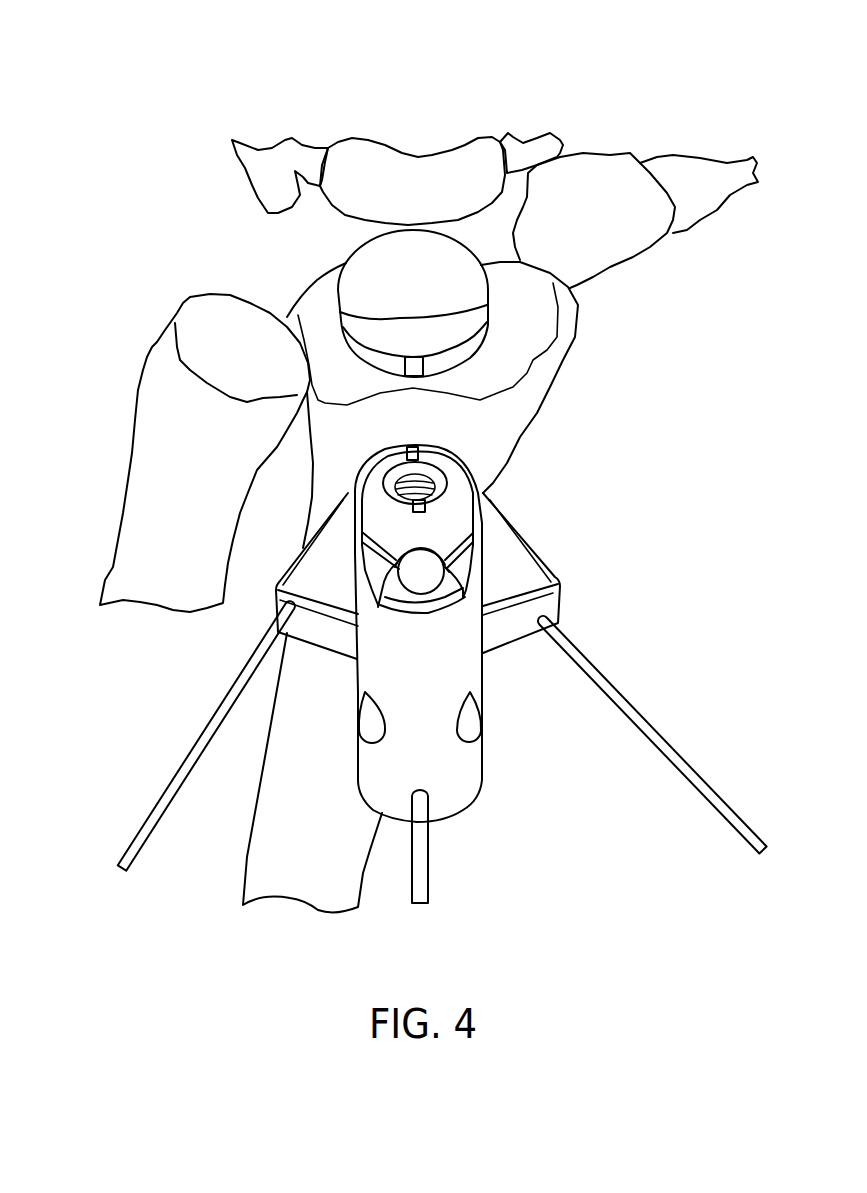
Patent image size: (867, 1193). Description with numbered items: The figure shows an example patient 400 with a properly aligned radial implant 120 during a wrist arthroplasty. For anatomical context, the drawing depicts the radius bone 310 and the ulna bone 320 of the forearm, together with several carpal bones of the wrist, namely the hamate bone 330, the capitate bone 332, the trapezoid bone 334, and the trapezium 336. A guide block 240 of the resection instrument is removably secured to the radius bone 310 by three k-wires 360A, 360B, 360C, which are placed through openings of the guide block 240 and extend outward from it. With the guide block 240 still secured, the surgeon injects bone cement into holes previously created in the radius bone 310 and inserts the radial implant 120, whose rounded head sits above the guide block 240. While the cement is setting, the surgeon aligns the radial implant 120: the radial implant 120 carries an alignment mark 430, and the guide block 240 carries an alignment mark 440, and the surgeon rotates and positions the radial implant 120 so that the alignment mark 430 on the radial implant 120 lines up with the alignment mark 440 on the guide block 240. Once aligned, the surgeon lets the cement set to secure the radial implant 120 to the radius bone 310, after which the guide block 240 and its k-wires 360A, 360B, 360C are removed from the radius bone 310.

The patient 400 is at (176, 84).
The radial implant 120 is at (330, 255).
The guide block 240 is at (557, 567).
The radius bone 310 is at (268, 866).
The ulna bone 320 is at (135, 531).
The hamate bone 330 is at (258, 174).
The capitate bone 332 is at (402, 162).
The trapezoid bone 334 is at (523, 150).
The trapezium 336 is at (642, 245).
The k-wire 360A is at (160, 810).
The k-wire 360B is at (420, 870).
The k-wire 360C is at (698, 787).
The alignment mark 430 is at (436, 368).
The alignment mark 440 is at (427, 505).